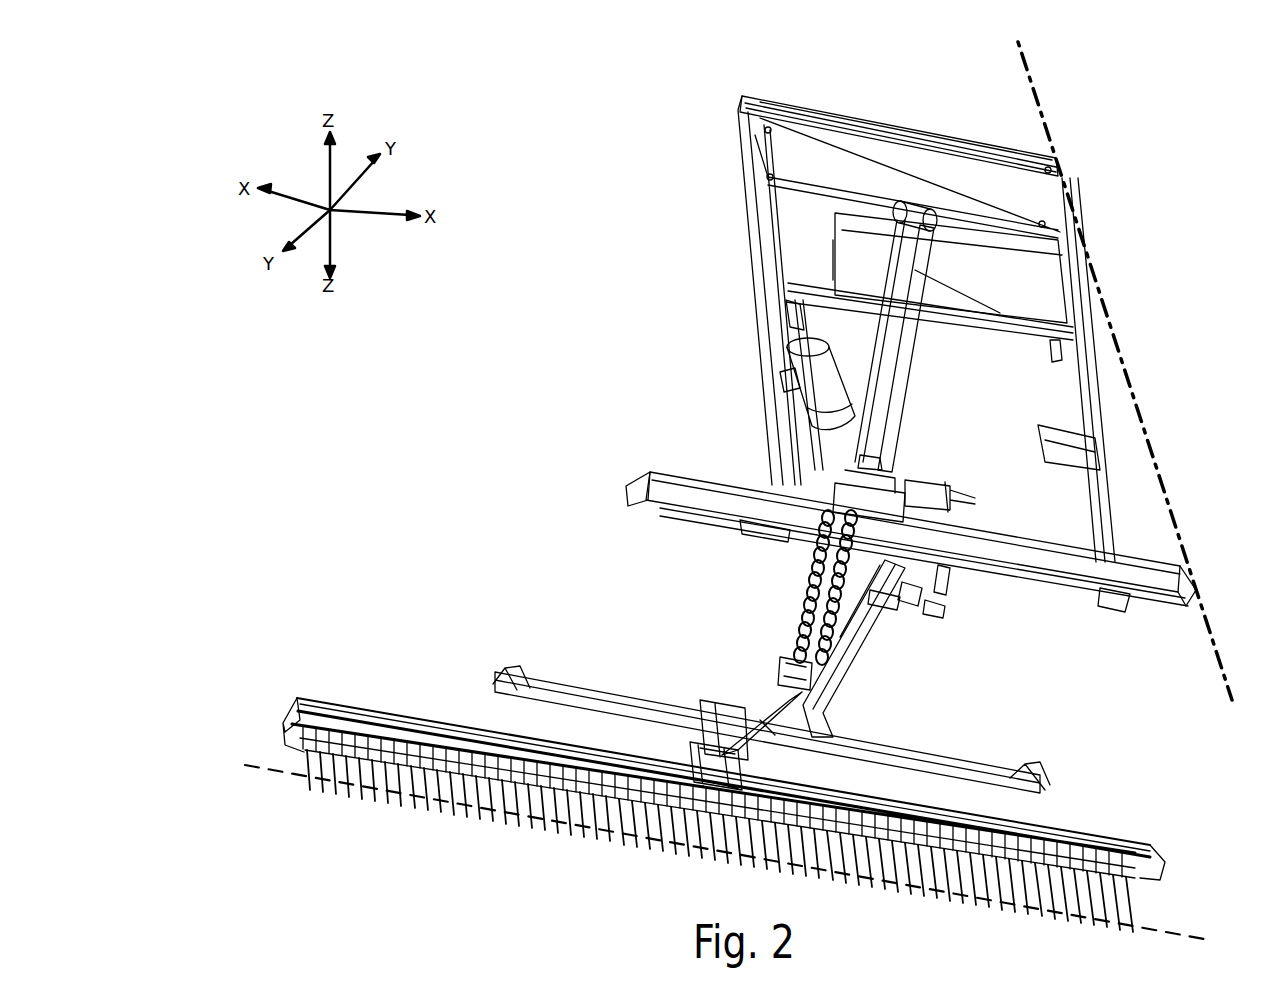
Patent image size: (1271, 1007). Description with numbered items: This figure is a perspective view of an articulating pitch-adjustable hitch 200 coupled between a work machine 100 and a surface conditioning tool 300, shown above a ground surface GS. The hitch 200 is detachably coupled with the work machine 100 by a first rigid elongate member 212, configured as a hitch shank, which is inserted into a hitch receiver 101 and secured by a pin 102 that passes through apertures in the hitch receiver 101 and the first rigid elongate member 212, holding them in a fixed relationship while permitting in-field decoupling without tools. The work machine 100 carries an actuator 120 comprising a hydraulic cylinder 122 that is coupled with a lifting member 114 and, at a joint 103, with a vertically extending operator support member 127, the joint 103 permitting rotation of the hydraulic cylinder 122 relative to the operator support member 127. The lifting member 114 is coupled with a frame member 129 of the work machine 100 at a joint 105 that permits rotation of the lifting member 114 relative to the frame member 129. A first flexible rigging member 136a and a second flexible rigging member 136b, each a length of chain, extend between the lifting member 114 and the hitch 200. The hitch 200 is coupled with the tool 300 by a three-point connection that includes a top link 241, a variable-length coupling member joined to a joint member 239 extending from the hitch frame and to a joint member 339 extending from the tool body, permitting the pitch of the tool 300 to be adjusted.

The work machine 100 is at (881, 387).
The operator support member 127 is at (742, 197).
The actuator 120 is at (864, 335).
The joint 103 is at (948, 224).
The hydraulic cylinder 122 is at (905, 350).
The lifting member 114 is at (912, 485).
The joint 105 is at (940, 490).
The frame member 129 is at (975, 528).
The hitch receiver 101 is at (948, 578).
The pin 102 is at (945, 617).
The first rigid elongate member 212 is at (910, 598).
The first flexible rigging member 136a is at (805, 612).
The second flexible rigging member 136b is at (858, 648).
The joint member 239 is at (780, 672).
The top link 241 is at (775, 705).
The joint member 339 is at (690, 752).
The articulating pitch-adjustable hitch 200 is at (675, 632).
The surface conditioning tool 300 is at (685, 789).
The ground surface GS is at (1183, 928).